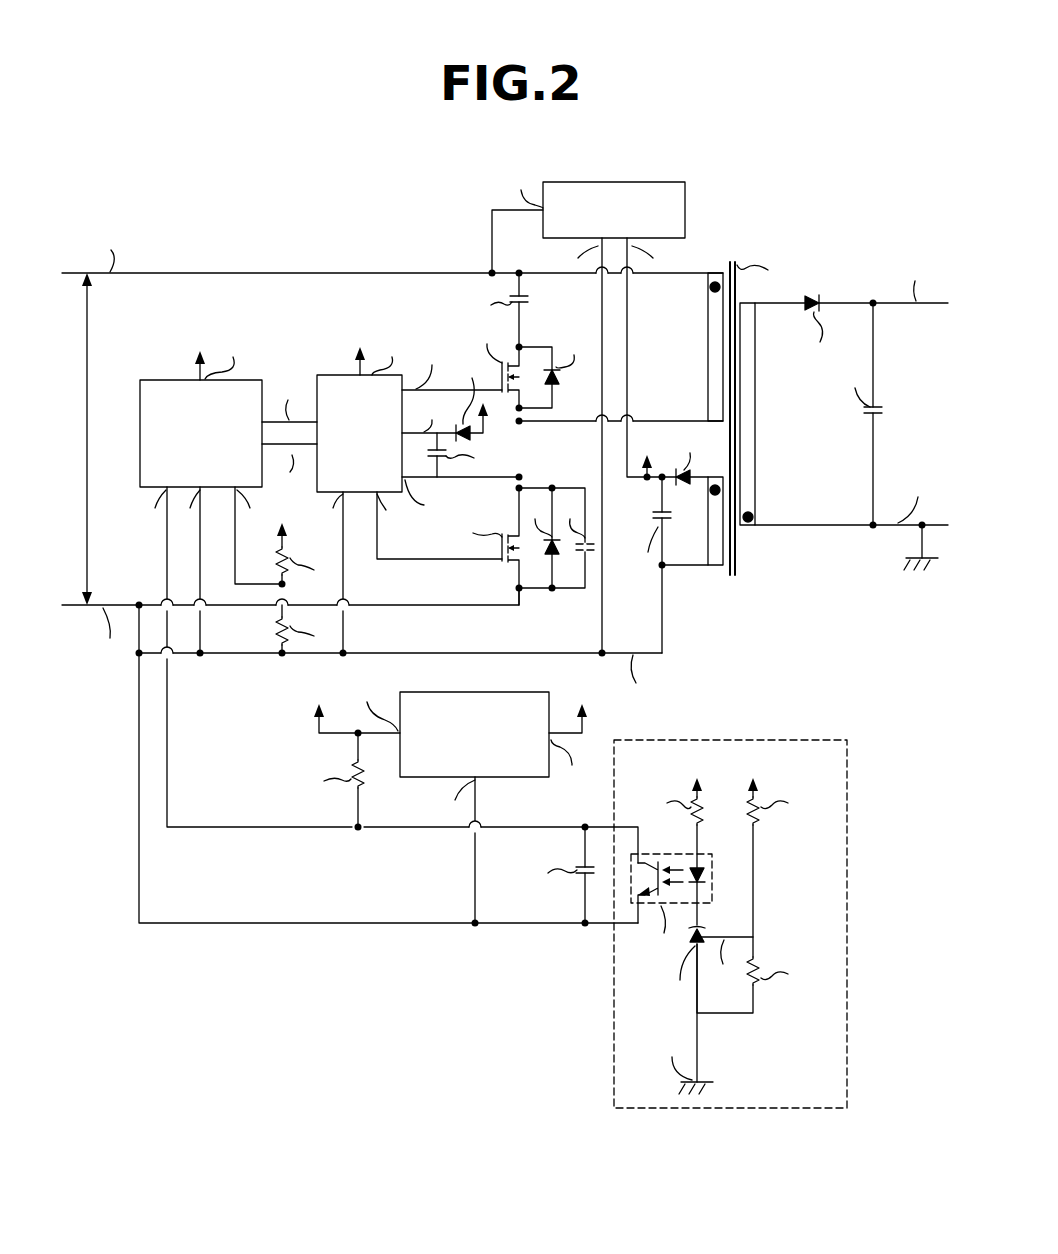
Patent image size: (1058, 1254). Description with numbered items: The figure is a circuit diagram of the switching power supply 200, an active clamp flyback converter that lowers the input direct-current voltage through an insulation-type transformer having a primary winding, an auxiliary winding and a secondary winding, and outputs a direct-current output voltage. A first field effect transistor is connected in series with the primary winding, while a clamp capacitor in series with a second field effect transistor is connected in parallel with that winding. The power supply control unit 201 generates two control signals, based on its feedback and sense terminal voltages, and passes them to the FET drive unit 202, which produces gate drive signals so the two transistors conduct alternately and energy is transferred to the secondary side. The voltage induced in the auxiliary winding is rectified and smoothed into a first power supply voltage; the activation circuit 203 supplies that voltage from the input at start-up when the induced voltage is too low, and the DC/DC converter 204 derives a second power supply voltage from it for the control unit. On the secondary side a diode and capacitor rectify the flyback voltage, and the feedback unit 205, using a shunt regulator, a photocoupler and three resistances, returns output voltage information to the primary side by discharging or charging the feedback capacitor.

The switching power supply 200 is at (815, 208).
The power supply control unit 201 is at (160, 379).
The FET drive unit 202 is at (331, 375).
The activation circuit 203 is at (685, 210).
The DC/DC converter 204 is at (452, 692).
The feedback unit 205 is at (737, 740).